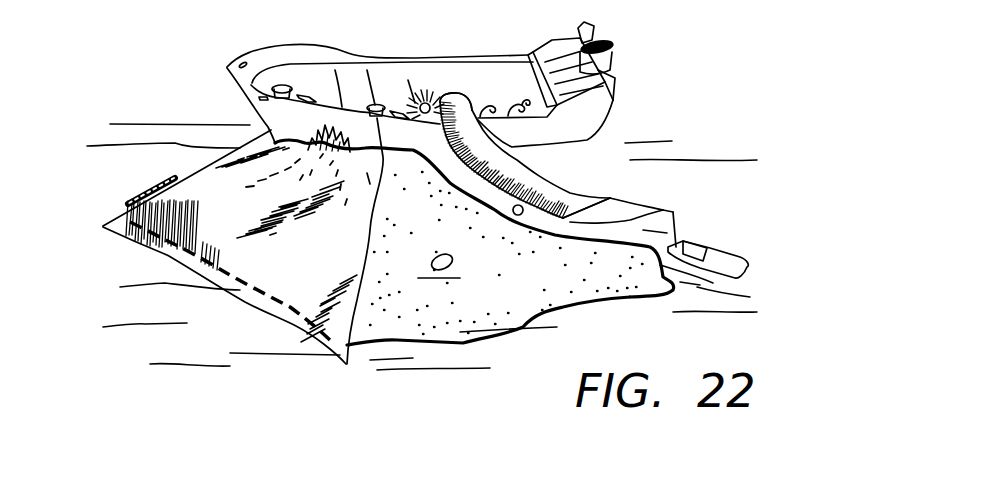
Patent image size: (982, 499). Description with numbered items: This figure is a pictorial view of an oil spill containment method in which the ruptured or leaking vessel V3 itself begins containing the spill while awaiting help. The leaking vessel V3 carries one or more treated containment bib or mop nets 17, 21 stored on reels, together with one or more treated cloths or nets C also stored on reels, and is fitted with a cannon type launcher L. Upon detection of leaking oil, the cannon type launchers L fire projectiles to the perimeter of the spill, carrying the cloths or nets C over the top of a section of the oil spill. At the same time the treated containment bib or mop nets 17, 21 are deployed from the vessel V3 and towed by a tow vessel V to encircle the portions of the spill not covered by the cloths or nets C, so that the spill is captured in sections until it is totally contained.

The treated cloth or net C is at (213, 190).
The cannon type launcher L is at (305, 93).
The ruptured or leaking vessel V3 is at (355, 80).
The treated containment bib or mop net 17 is at (745, 117).
The treated containment bib or mop net 21 is at (745, 117).
The tow vessel V is at (697, 243).